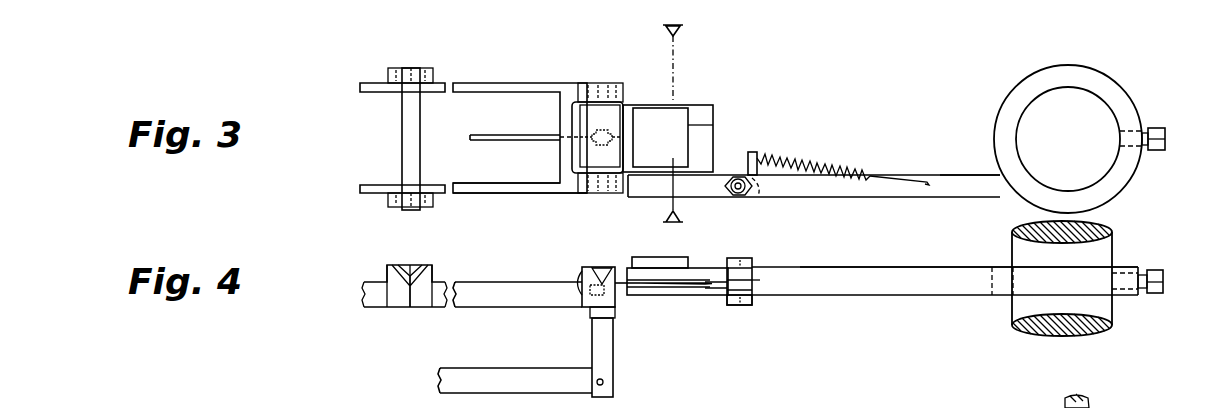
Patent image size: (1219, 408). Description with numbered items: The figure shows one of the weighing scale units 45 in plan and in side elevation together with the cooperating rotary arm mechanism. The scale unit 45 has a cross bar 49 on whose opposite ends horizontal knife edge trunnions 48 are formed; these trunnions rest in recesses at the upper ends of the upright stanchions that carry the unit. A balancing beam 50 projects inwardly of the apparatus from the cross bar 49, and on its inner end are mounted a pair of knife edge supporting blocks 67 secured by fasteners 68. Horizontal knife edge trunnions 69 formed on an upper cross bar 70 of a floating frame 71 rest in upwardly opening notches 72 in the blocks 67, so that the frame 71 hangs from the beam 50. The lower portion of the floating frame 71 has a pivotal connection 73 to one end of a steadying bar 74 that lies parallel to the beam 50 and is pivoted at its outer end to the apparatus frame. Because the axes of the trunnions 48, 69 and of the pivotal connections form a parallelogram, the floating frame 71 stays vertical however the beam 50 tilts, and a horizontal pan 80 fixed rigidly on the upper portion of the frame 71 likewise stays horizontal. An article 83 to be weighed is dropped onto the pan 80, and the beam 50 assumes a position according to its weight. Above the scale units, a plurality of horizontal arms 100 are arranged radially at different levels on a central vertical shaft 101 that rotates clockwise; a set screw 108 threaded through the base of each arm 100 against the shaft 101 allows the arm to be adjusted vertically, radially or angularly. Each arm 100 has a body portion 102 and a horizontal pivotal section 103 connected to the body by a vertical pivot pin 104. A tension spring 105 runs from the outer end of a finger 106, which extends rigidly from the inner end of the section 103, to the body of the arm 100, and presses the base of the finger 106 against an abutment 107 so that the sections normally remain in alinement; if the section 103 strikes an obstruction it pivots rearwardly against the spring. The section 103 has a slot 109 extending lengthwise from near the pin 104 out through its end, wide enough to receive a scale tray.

In FIG. 3, the weighing scale unit 45 is at (496, 74).
In FIG. 3, the knife edge trunnions 48 is at (413, 68).
In FIG. 4, the knife edge trunnions 48 is at (410, 290).
In FIG. 3, the cross bar 49 is at (402, 129).
In FIG. 4, the cross bar 49 is at (412, 275).
In FIG. 3, the balancing beam 50 is at (518, 193).
In FIG. 4, the balancing beam 50 is at (515, 278).
In FIG. 4, the knife edge supporting blocks 67 is at (590, 293).
In FIG. 4, the fasteners 68 is at (617, 314).
In FIG. 4, the knife edge trunnions 69 is at (603, 272).
In FIG. 3, the upper cross bar 70 is at (580, 119).
In FIG. 4, the floating frame 71 is at (609, 356).
In FIG. 4, the notches 72 is at (578, 275).
In FIG. 4, the pivotal connection 73 is at (604, 384).
In FIG. 3, the steadying bar 74 is at (504, 141).
In FIG. 4, the steadying bar 74 is at (528, 372).
In FIG. 3, the horizontal pan 80 is at (696, 108).
In FIG. 4, the horizontal pan 80 is at (697, 278).
In FIG. 3, the article 83 is at (713, 119).
In FIG. 4, the article 83 is at (666, 263).
In FIG. 3, the horizontal arm 100 is at (931, 170).
In FIG. 4, the horizontal arm 100 is at (960, 295).
In FIG. 3, the central vertical shaft 101 is at (1068, 139).
In FIG. 4, the central vertical shaft 101 is at (1110, 318).
In FIG. 3, the body portion 102 is at (884, 186).
In FIG. 4, the body portion 102 is at (802, 294).
In FIG. 3, the pivotal section 103 is at (703, 183).
In FIG. 4, the pivotal section 103 is at (720, 268).
In FIG. 4, the vertical pivot pin 104 is at (740, 306).
In FIG. 3, the tension spring 105 is at (826, 166).
In FIG. 3, the finger 106 is at (752, 151).
In FIG. 3, the abutment 107 is at (768, 195).
In FIG. 4, the abutment 107 is at (756, 280).
In FIG. 3, the set screw 108 is at (1152, 128).
In FIG. 4, the set screw 108 is at (1163, 276).
In FIG. 4, the slot 109 is at (713, 292).